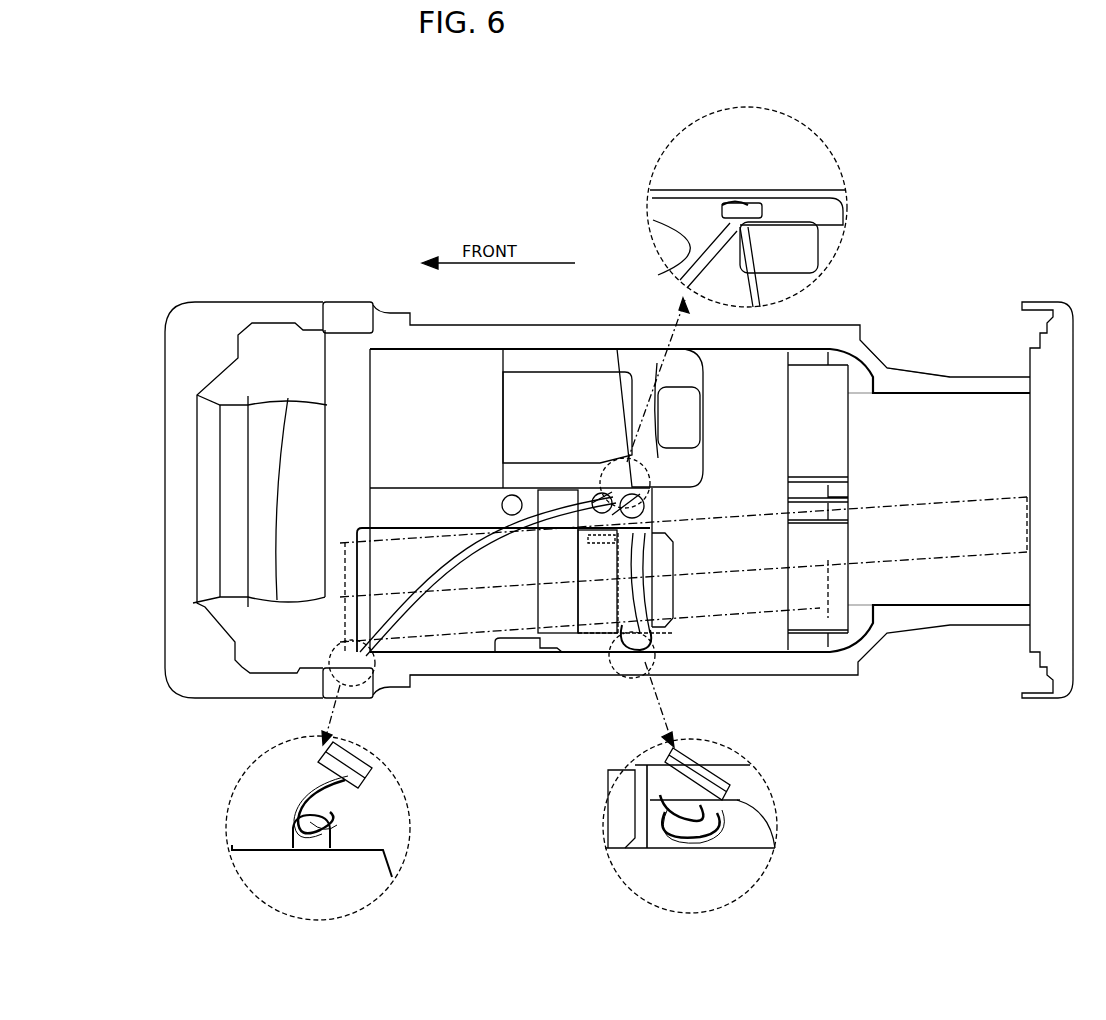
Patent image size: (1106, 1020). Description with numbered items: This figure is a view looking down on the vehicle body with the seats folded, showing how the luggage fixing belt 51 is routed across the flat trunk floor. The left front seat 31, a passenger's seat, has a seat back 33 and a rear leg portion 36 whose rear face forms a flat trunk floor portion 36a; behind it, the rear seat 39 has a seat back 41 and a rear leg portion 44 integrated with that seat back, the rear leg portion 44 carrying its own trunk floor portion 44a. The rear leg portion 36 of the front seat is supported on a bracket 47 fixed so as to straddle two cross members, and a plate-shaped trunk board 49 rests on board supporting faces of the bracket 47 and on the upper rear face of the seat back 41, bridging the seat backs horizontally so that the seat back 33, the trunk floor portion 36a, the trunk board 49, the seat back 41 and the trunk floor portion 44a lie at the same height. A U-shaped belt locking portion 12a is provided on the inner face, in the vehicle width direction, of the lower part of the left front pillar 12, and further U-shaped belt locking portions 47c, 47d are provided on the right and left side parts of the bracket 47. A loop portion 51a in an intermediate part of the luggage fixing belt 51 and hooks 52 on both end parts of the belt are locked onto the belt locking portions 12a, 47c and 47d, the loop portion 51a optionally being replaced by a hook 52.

The left front pillar 12 is at (345, 300).
The belt locking portion 12a is at (340, 652).
The left front seat 31 is at (455, 488).
The seat back 33 is at (455, 643).
The rear leg portion 36 is at (538, 653).
The trunk floor portion 36a is at (552, 603).
The rear seat 39 is at (779, 658).
The seat back 41 is at (775, 368).
The rear leg portion 44 is at (853, 457).
The trunk floor portion 44a is at (833, 430).
The bracket 47 is at (656, 512).
The belt locking portion 47c is at (648, 657).
The belt locking portion 47d is at (625, 460).
The trunk board 49 is at (603, 605).
The luggage fixing belt 51 is at (480, 553).
The loop portion 51a is at (728, 205).
The hook 52 is at (322, 798).